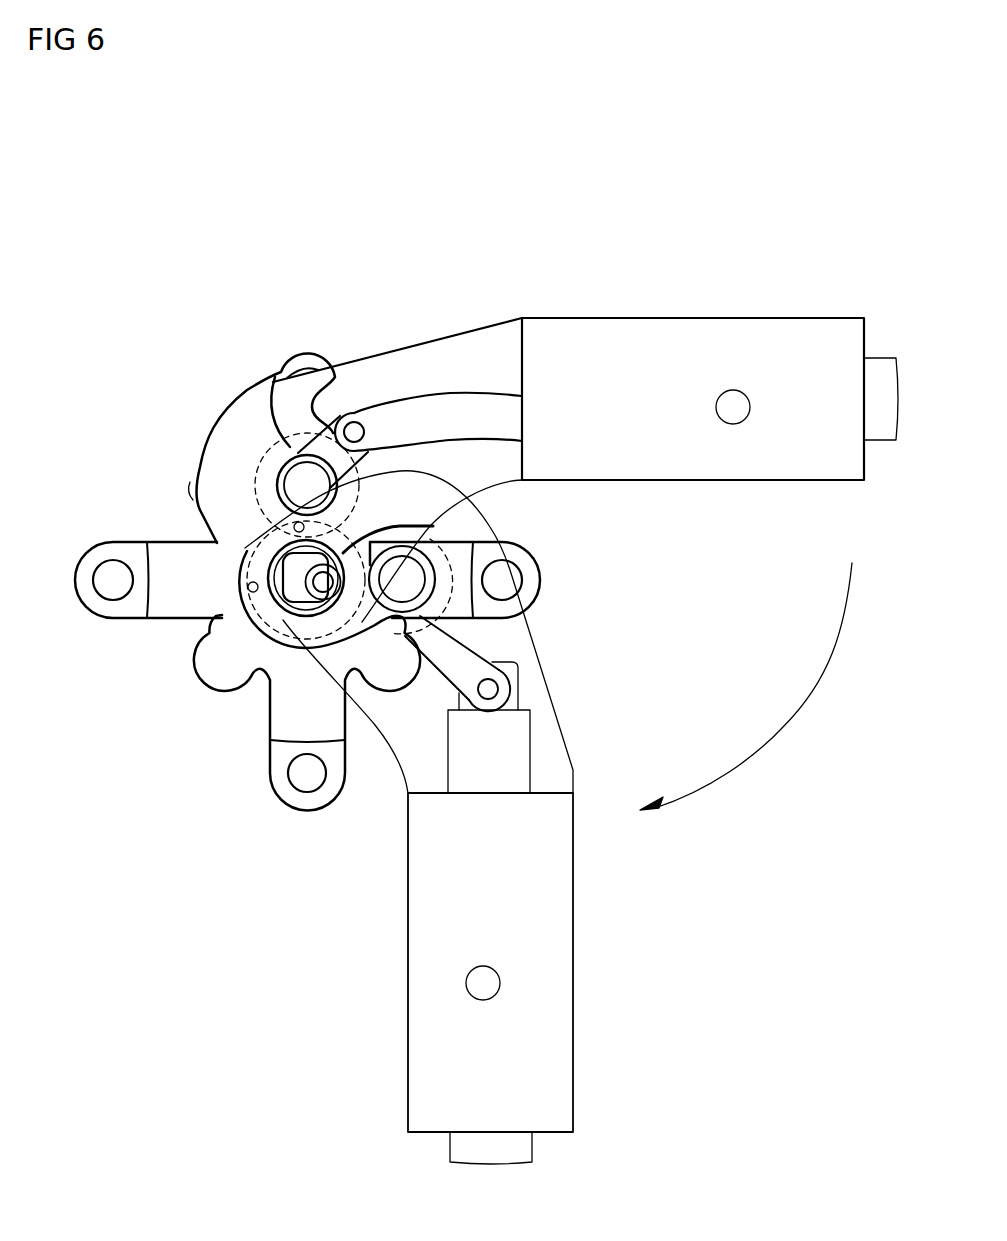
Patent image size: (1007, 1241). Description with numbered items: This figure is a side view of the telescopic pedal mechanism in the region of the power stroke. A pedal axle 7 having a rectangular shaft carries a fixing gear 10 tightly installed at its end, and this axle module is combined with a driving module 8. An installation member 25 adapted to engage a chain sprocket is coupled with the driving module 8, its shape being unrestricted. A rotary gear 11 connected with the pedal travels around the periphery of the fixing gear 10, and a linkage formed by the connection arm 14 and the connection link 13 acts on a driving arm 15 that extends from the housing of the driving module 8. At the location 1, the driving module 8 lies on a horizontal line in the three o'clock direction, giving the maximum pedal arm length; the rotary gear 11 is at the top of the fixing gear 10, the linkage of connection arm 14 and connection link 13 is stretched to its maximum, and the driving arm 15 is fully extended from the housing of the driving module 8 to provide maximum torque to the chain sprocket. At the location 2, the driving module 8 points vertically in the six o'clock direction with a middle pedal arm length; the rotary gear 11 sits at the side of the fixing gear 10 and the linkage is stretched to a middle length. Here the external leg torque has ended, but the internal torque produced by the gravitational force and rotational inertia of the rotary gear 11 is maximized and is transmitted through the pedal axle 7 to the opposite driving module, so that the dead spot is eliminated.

The location of driving module at three o'clock 1 is at (733, 407).
The location of driving module at six o'clock 2 is at (489, 890).
The pedal axle 7 is at (305, 595).
The driving module 8 is at (651, 327).
The fixing gear 10 is at (433, 526).
The rotary gear 11 is at (273, 377).
The connection link 13 is at (335, 376).
The connection arm 14 is at (455, 407).
The driving arm 15 is at (887, 375).
The installation member 25 is at (540, 581).